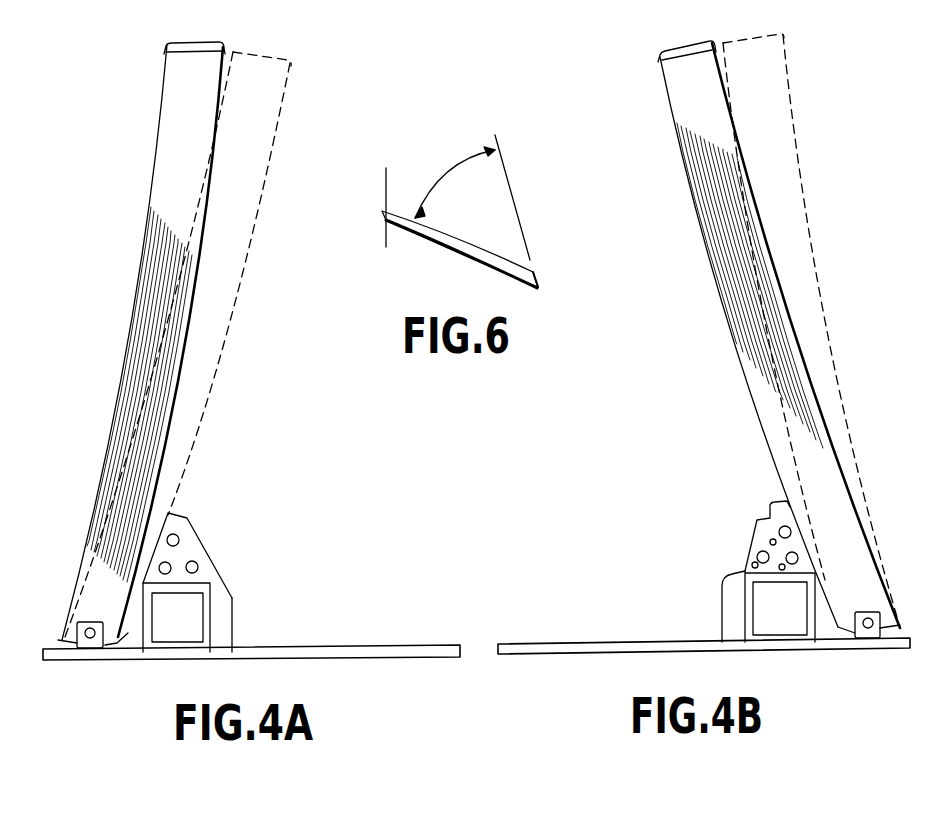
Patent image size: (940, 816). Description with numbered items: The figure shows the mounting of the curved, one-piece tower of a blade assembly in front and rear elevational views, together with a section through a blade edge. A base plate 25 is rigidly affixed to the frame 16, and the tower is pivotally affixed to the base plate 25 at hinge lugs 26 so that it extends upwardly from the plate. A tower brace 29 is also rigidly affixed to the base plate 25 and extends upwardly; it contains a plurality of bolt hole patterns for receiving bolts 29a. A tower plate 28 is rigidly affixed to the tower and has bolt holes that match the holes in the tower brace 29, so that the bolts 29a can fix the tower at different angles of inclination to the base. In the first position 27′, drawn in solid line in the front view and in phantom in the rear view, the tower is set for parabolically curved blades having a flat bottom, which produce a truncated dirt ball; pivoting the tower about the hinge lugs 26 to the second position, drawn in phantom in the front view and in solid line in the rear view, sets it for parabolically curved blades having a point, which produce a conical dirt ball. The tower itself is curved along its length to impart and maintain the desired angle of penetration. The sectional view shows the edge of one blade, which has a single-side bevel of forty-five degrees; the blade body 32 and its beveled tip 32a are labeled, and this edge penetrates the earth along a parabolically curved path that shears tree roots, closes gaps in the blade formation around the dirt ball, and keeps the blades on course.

In FIG. 4A, the frame 16 is at (207, 622).
In FIG. 4B, the frame 16 is at (748, 613).
In FIG. 4A, the base plate 25 is at (391, 645).
In FIG. 4B, the base plate 25 is at (528, 643).
In FIG. 4A, the hinge lugs 26 is at (90, 649).
In FIG. 4B, the hinge lugs 26 is at (867, 638).
In FIG. 4A, the first position of tower 27′ is at (174, 165).
In FIG. 4B, the first position of tower 27′ is at (790, 126).
In FIG. 4A, the tower plate 28 is at (200, 532).
In FIG. 4B, the tower plate 28 is at (753, 530).
In FIG. 4A, the tower brace 29 is at (228, 597).
In FIG. 4B, the tower brace 29 is at (730, 588).
In FIG. 4A, the bolts 29a is at (197, 565).
In FIG. 6, the blade 32 is at (453, 247).
In FIG. 6, the blade tip 32a is at (538, 283).